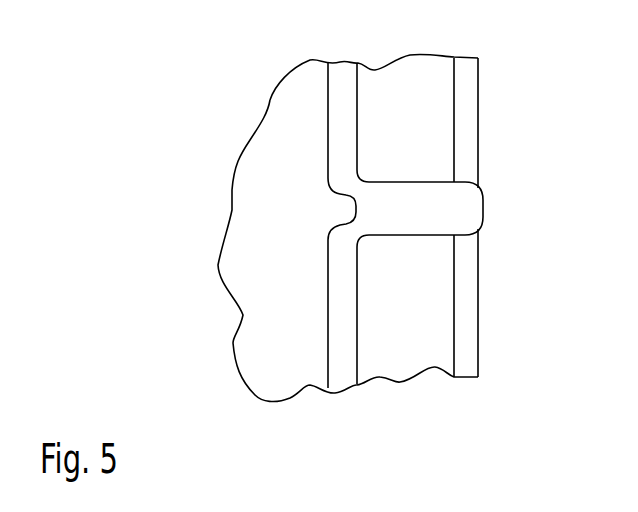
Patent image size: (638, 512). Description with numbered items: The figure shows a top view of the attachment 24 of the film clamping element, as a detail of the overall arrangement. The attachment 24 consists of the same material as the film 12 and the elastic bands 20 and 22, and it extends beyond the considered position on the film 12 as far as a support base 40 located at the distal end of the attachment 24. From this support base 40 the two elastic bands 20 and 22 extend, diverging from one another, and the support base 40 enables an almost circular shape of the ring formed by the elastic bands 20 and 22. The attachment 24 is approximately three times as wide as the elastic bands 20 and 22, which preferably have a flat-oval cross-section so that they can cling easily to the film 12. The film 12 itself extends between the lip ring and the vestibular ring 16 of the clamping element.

The film 12 is at (420, 142).
The vestibular ring 16 is at (462, 290).
The elastic band 20 is at (341, 370).
The elastic band 22 is at (346, 80).
The attachment 24 is at (426, 213).
The support base 40 is at (350, 210).